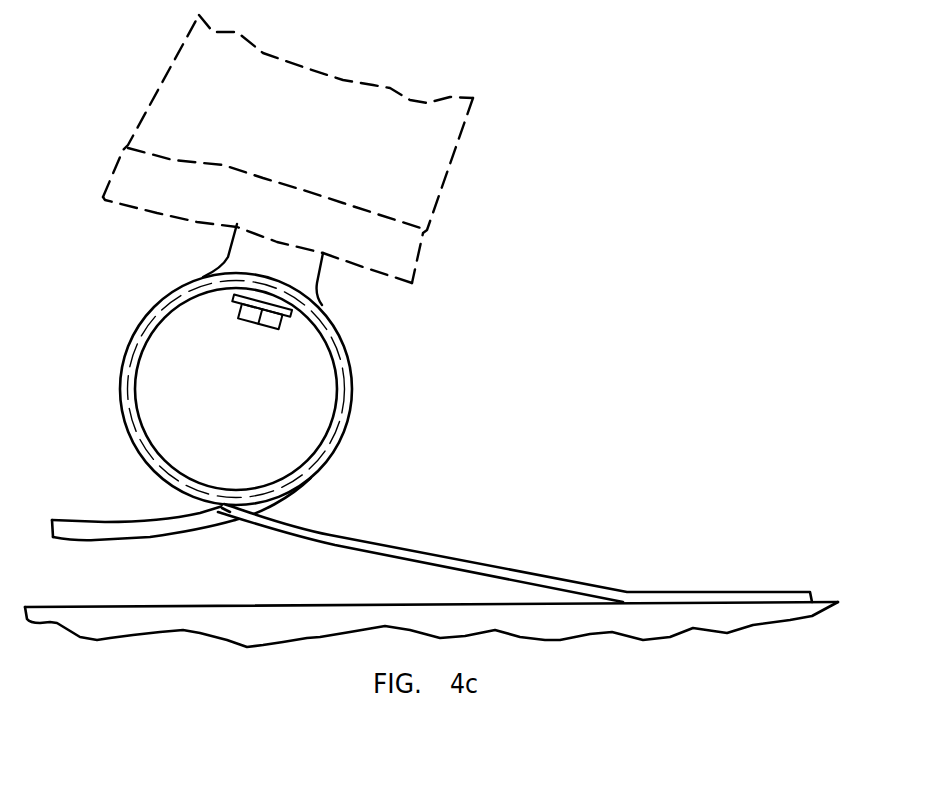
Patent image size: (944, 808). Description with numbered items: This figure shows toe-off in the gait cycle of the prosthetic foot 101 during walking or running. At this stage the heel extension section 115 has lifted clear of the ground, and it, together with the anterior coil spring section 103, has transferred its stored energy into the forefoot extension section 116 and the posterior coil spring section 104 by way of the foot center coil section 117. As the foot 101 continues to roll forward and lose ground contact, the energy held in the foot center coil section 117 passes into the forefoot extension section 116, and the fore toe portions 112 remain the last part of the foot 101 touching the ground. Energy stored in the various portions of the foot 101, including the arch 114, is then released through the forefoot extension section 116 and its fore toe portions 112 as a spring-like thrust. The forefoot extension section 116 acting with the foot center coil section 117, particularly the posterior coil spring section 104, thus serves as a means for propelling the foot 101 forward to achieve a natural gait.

The prosthetic foot 101 is at (342, 322).
The anterior coil spring section 103 is at (350, 390).
The posterior coil spring section 104 is at (148, 318).
The fore toe portions 112 is at (717, 603).
The arch 114 is at (228, 518).
The heel extension section 115 is at (73, 527).
The forefoot extension section 116 is at (453, 562).
The foot center coil section 117 is at (320, 478).